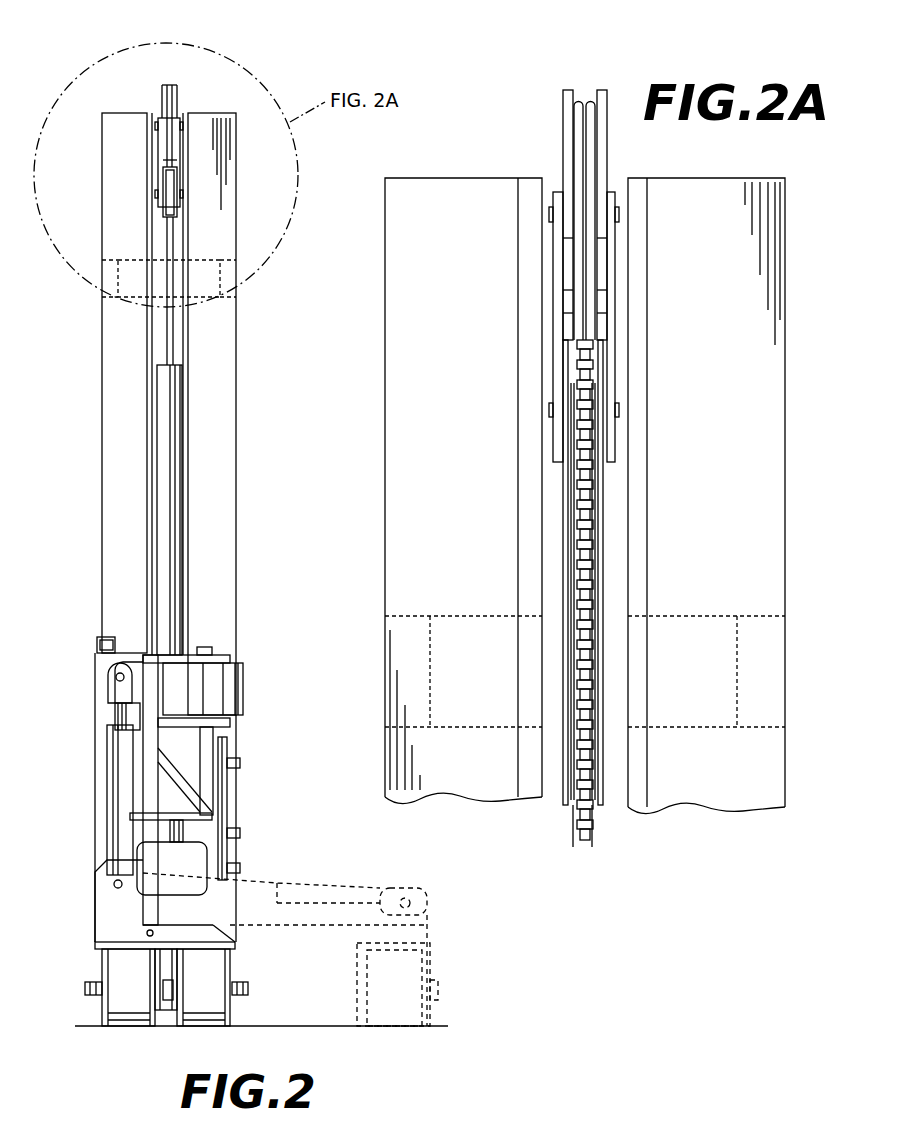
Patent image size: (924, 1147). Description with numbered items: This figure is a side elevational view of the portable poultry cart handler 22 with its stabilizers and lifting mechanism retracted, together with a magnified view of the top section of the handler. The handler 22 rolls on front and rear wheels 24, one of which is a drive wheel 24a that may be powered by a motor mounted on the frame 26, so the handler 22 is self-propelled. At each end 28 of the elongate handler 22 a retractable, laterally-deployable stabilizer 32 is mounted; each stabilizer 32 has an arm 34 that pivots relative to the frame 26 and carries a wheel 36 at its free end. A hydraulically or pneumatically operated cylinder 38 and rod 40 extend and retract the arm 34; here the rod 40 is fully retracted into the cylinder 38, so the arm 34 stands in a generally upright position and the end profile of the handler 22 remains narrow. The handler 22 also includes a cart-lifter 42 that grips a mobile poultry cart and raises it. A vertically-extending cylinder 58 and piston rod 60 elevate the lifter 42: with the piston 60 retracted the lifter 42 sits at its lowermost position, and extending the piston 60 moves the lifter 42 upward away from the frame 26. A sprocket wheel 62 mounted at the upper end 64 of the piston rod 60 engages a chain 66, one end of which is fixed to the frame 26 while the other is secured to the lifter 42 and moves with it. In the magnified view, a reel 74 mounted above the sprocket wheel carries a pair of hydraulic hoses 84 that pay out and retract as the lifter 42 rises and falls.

In FIG. 2, the handler 22 is at (84, 465).
In FIG. 2, the front and rear wheels 24 is at (128, 1023).
In FIG. 2, the drive wheel 24a is at (205, 1022).
In FIG. 2, the frame 26 is at (105, 883).
In FIG. 2, the end 28 is at (100, 915).
In FIG. 2, the stabilizer 32 is at (147, 762).
In FIG. 2, the arm 34 is at (147, 772).
In FIG. 2, the wheel 36 is at (240, 687).
In FIG. 2, the cylinder 38 is at (113, 837).
In FIG. 2, the rod 40 is at (113, 717).
In FIG. 2, the cart-lifter 42 is at (220, 603).
In FIG. 2A, the cart-lifter 42 is at (775, 428).
In FIG. 2, the cylinder 58 is at (173, 465).
In FIG. 2, the piston rod 60 is at (175, 347).
In FIG. 2A, the piston rod 60 is at (600, 760).
In FIG. 2, the sprocket wheel 62 is at (178, 200).
In FIG. 2A, the sprocket wheel 62 is at (603, 420).
In FIG. 2, the upper end 64 is at (167, 240).
In FIG. 2A, the upper end 64 is at (603, 473).
In FIG. 2A, the chain link 66 is at (592, 565).
In FIG. 2, the reel 74 is at (177, 93).
In FIG. 2A, the reel 74 is at (600, 90).
In FIG. 2A, the hydraulic hoses 84 is at (582, 100).